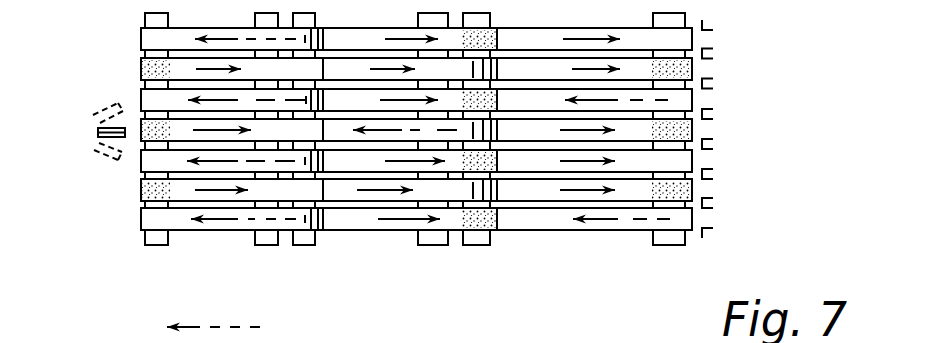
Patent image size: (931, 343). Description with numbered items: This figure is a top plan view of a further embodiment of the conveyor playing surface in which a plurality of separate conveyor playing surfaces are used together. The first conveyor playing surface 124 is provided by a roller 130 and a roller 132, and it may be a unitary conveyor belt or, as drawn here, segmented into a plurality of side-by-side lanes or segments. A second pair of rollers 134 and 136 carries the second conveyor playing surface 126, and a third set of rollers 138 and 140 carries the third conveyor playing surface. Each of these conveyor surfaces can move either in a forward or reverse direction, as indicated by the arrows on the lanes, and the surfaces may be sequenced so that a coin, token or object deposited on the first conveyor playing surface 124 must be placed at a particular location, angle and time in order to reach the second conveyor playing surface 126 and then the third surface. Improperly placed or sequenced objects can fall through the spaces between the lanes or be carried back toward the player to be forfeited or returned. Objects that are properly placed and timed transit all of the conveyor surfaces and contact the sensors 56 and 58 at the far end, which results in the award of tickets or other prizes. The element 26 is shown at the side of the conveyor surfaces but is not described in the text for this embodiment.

The coating nozzle 26 is at (98, 131).
The sensor 56 is at (712, 146).
The sensor 58 is at (712, 174).
The first conveyor playing surface 124 is at (277, 335).
The second conveyor playing surface 126 is at (456, 333).
The roller 130 is at (157, 246).
The roller 132 is at (310, 246).
The roller 134 is at (266, 246).
The roller 136 is at (479, 246).
The roller 138 is at (431, 246).
The roller 140 is at (668, 246).